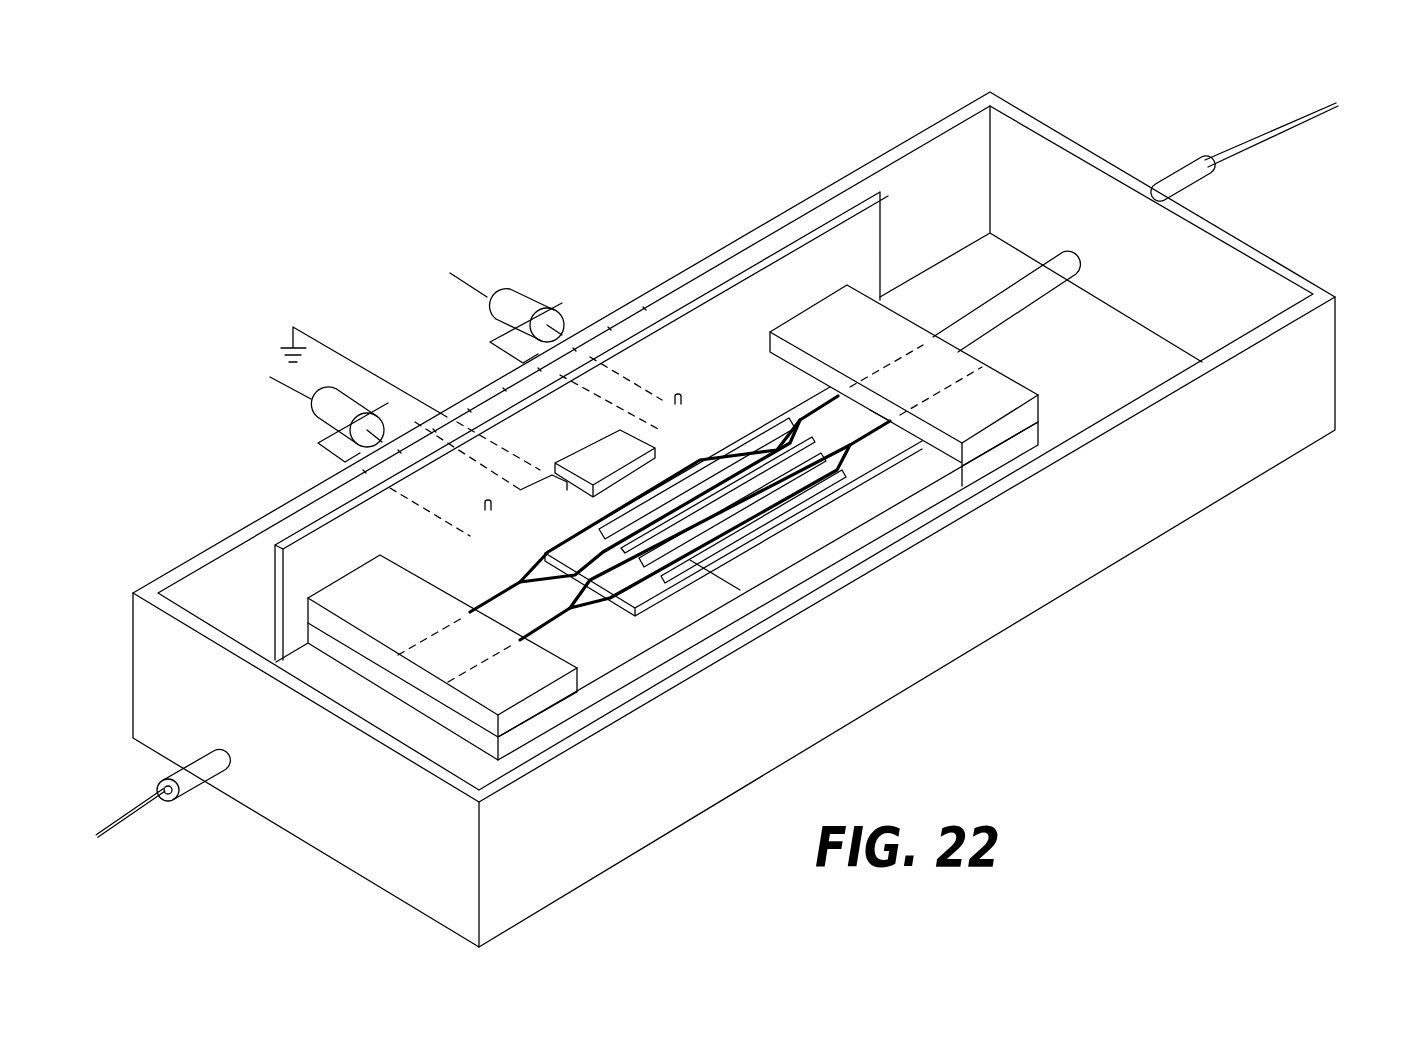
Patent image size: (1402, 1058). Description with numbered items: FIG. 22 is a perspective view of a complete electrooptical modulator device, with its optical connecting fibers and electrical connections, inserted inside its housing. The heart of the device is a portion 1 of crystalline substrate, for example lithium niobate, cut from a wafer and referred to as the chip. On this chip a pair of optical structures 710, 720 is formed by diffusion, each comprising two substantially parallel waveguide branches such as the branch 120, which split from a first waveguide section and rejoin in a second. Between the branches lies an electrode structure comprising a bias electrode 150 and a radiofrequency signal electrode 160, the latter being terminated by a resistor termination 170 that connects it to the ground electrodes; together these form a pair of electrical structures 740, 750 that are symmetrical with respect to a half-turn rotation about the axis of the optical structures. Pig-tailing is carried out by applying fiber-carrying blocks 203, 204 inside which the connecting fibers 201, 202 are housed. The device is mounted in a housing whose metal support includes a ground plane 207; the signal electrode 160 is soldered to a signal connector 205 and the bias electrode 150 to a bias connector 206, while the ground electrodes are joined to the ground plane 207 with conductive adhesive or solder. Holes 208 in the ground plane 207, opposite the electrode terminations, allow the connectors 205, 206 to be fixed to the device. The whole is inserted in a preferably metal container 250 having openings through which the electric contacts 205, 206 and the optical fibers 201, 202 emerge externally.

The portion of crystalline substrate 1 is at (583, 702).
The branch of the optical structure 120 is at (890, 425).
The bias electrode 150 is at (738, 455).
The signal electrode 160 is at (846, 582).
The resistor termination 170 is at (597, 457).
The connecting fiber 201 is at (120, 833).
The connecting fiber 202 is at (1254, 146).
The fiber-carrying block 203 is at (187, 787).
The fiber-carrying block 204 is at (1020, 298).
The signal connector 205 is at (318, 413).
The bias connector 206 is at (545, 320).
The ground plane 207 is at (315, 552).
The holes 208 is at (677, 395).
The container 250 is at (1222, 472).
The optical structure 710 is at (610, 653).
The optical structure 720 is at (836, 403).
The electrical structure 740 is at (742, 578).
The electrical structure 750 is at (757, 372).